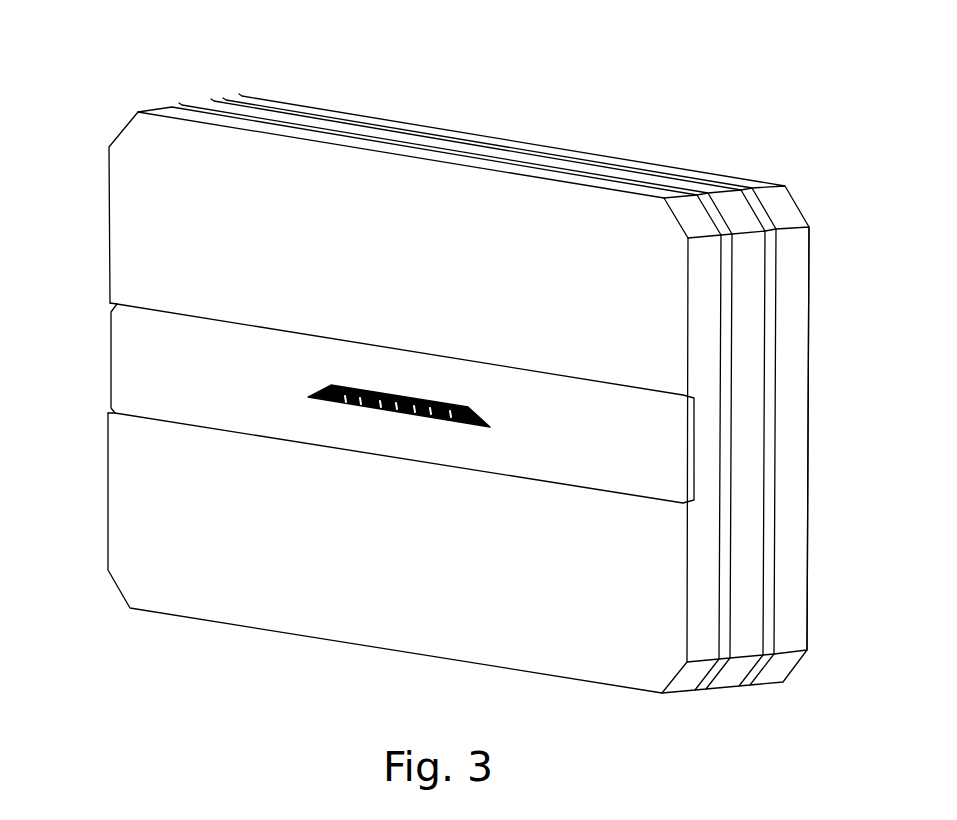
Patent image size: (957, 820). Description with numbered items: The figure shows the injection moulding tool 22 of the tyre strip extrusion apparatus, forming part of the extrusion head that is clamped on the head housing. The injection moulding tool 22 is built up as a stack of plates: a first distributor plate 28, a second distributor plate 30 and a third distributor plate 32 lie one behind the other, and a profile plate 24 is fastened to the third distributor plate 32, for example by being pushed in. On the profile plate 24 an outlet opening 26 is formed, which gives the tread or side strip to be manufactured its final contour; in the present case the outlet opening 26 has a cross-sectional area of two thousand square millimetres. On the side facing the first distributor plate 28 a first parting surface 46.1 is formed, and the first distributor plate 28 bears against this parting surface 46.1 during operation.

The injection moulding tool 22 is at (108, 104).
The profile plate 24 is at (123, 367).
The outlet opening 26 is at (350, 405).
The first distributor plate 28 is at (788, 190).
The second distributor plate 30 is at (681, 190).
The third distributor plate 32 is at (607, 191).
The first parting surface 46.1 is at (819, 219).